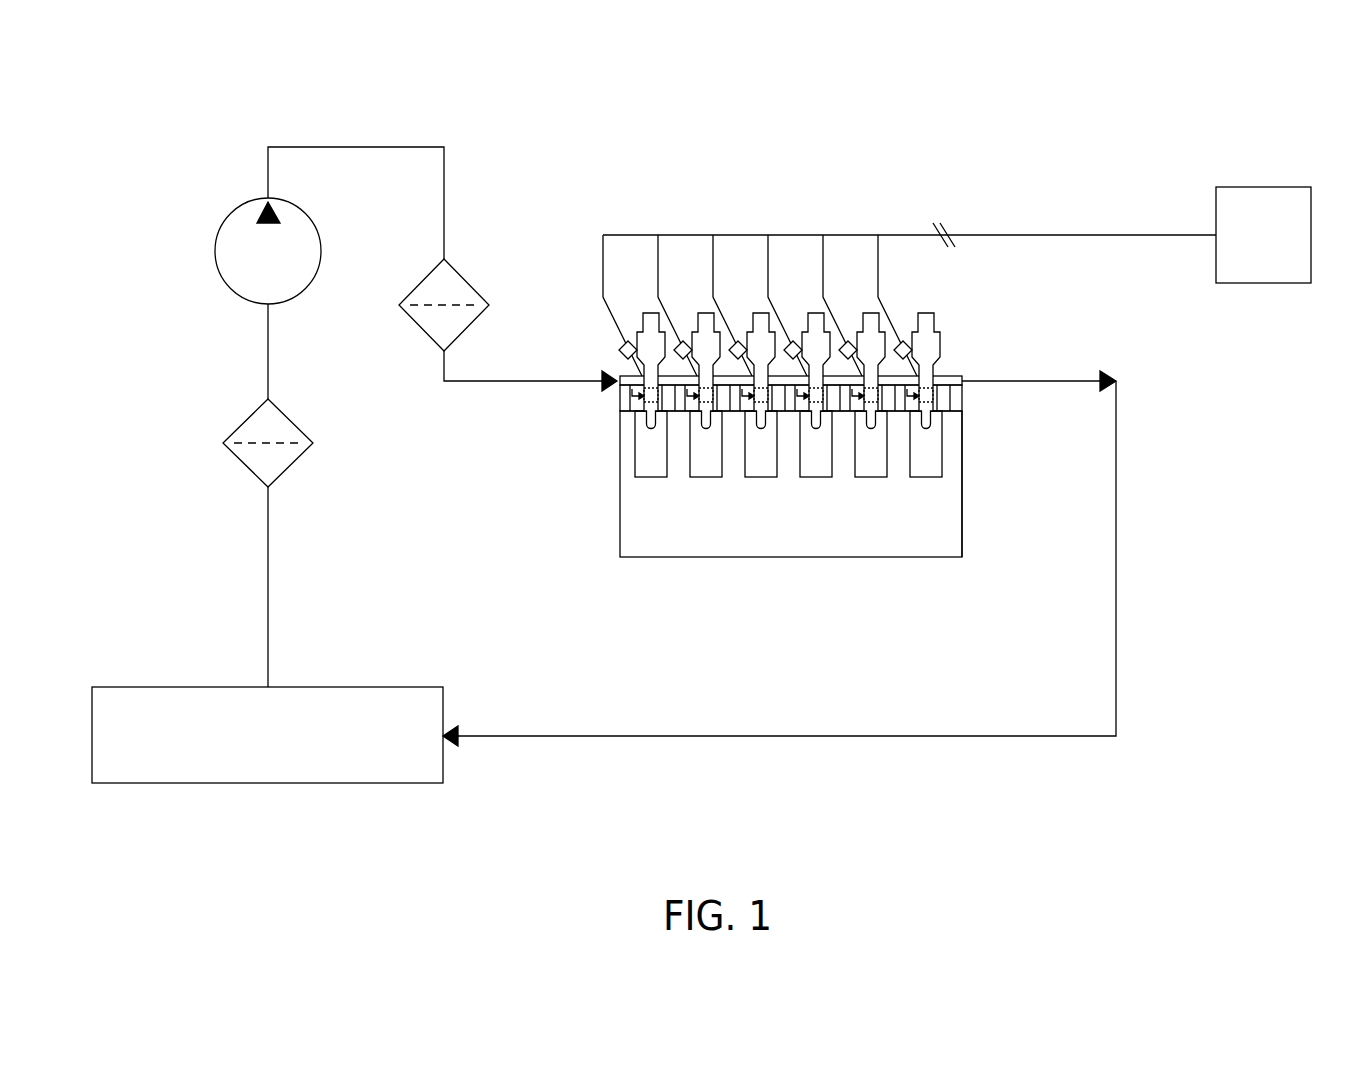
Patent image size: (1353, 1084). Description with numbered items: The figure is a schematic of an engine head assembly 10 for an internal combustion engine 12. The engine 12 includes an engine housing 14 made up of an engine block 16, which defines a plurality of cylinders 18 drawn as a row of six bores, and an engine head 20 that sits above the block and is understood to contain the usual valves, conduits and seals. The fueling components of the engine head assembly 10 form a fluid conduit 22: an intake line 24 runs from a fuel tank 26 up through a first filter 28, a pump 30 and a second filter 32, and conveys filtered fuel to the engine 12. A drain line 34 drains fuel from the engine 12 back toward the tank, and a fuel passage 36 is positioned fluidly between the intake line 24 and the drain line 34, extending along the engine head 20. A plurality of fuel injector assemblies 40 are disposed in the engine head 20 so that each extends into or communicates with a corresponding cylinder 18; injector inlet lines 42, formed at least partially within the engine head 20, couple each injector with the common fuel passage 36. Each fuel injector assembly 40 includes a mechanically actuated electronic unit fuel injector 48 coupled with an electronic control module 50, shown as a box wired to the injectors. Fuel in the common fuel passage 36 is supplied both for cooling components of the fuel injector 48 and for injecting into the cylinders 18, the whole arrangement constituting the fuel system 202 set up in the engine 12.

The engine head assembly 10 is at (1017, 306).
The internal combustion engine 12 is at (533, 467).
The engine housing 14 is at (620, 537).
The engine block 16 is at (962, 537).
The cylinders 18 is at (943, 457).
The engine head 20 is at (620, 400).
The fluid conduit 22 is at (238, 530).
The intake line 24 is at (270, 600).
The fuel tank 26 is at (392, 687).
The first filter 28 is at (247, 420).
The pump 30 is at (244, 205).
The second filter 32 is at (462, 277).
The drain line 34 is at (1116, 537).
The fuel passage 36 is at (620, 375).
The fuel injector assemblies 40 is at (925, 312).
The injector inlet lines 42 is at (857, 393).
The fuel injector 48 is at (940, 375).
The electronic control module 50 is at (1250, 187).
The fuel system 202 is at (257, 96).